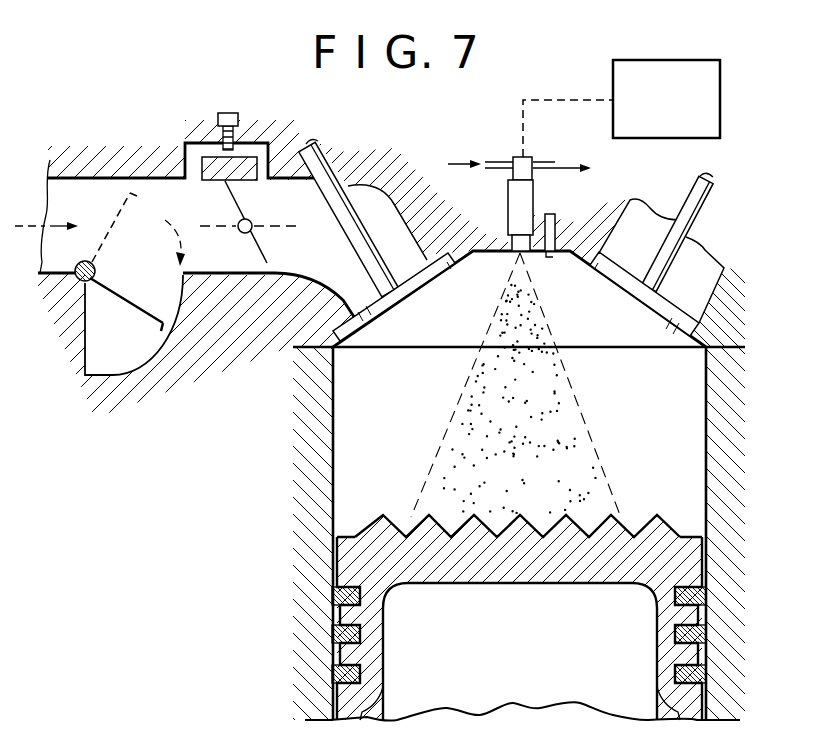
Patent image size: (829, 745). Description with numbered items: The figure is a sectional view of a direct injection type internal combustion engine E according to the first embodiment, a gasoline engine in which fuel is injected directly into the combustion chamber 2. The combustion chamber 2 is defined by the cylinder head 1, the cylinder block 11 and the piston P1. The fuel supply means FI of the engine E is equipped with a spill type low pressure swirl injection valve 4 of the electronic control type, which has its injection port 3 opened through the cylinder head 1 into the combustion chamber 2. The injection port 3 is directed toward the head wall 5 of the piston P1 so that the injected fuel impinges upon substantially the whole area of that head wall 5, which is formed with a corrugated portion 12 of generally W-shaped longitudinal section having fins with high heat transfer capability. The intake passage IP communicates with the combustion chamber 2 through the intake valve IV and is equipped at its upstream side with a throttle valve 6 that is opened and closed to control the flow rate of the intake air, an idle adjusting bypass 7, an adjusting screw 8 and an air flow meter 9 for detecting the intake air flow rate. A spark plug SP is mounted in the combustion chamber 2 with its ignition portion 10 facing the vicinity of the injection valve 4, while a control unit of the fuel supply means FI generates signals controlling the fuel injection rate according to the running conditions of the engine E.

The cylinder head 1 is at (596, 243).
The combustion chamber 2 is at (625, 330).
The injection port 3 is at (518, 255).
The injection valve 4 is at (510, 205).
The head wall 5 is at (345, 537).
The throttle valve 6 is at (269, 262).
The idle adjusting bypass 7 is at (192, 166).
The adjusting screw 8 is at (236, 113).
The air flow meter 9 is at (113, 364).
The ignition portion 10 is at (558, 254).
The cylinder block 11 is at (322, 437).
The corrugated portion 12 is at (405, 530).
The intake passage IP is at (210, 262).
The intake valve IV is at (373, 212).
The spark plug SP is at (556, 218).
The fuel supply means FI is at (515, 150).
The direct injection type internal combustion engine E is at (320, 569).
The piston P1 is at (372, 631).